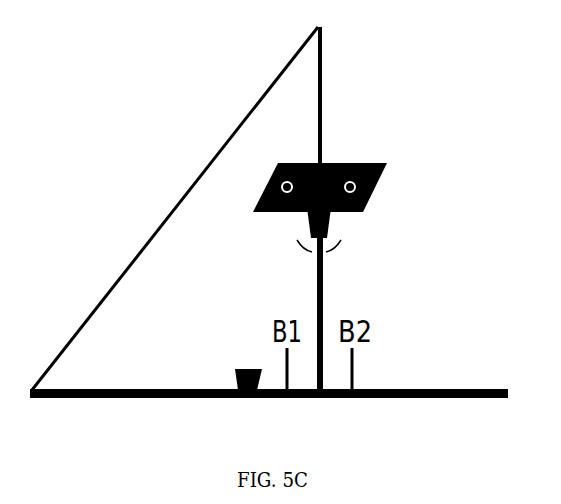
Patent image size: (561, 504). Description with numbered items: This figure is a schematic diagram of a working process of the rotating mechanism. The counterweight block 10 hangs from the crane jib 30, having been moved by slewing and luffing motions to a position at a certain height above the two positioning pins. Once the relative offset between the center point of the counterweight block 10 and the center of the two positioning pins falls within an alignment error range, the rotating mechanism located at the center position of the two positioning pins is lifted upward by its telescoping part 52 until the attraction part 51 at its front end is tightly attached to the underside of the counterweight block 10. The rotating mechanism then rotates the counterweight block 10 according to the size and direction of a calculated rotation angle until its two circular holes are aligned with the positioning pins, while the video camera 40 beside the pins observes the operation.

The counterweight block 10 is at (367, 163).
The crane jib 30 is at (200, 177).
The video camera 40 is at (228, 394).
The attraction part 51 is at (330, 223).
The telescoping part 52 is at (323, 277).